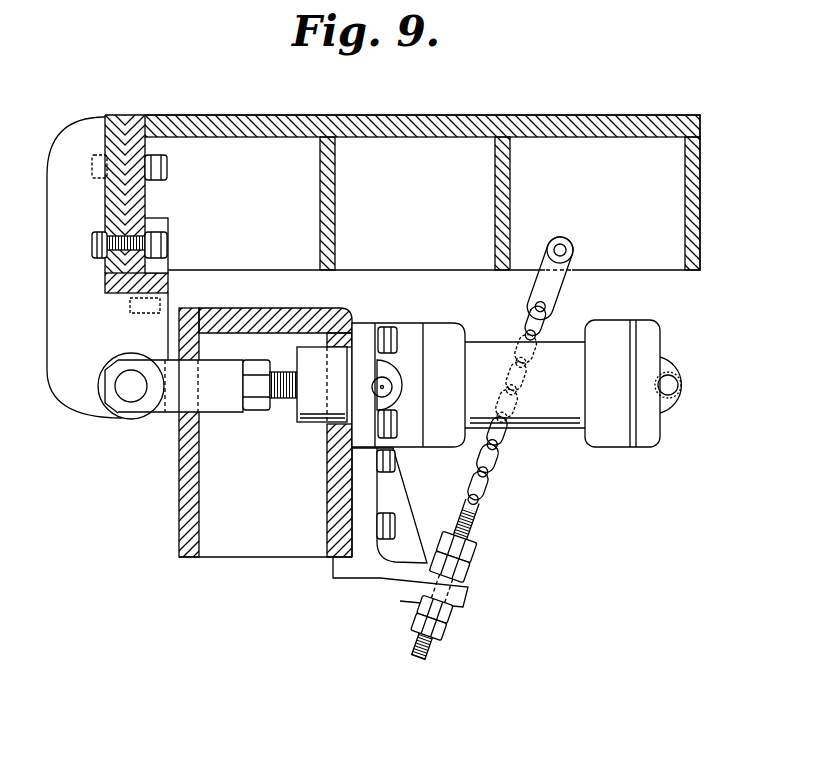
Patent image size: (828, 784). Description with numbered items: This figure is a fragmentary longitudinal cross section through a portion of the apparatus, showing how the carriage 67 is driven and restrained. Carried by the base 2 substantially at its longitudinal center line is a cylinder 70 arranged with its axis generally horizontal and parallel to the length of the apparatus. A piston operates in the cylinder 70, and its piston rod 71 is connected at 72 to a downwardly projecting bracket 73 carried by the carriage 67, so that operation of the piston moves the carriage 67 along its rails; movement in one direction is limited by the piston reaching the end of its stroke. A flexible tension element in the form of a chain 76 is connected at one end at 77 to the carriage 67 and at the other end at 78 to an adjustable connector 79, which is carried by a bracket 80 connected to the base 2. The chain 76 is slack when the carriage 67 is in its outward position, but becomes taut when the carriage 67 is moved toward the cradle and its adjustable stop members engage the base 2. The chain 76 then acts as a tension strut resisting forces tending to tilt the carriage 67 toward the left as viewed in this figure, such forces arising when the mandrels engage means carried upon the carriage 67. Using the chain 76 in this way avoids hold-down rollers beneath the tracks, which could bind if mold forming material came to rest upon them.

The base 2 is at (178, 528).
The carriage 67 is at (700, 177).
The cylinder 70 is at (552, 412).
The piston rod 71 is at (291, 398).
The connection 72 is at (129, 397).
The downwardly projecting bracket 73 is at (62, 307).
The chain 76 is at (494, 459).
The chain connection to carriage 77 is at (570, 244).
The chain connection to connector 78 is at (479, 498).
The adjustable connector 79 is at (469, 517).
The bracket 80 is at (408, 581).